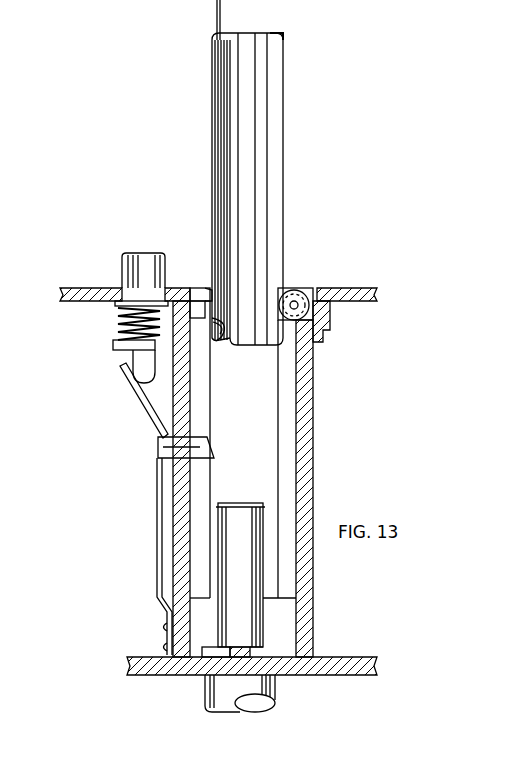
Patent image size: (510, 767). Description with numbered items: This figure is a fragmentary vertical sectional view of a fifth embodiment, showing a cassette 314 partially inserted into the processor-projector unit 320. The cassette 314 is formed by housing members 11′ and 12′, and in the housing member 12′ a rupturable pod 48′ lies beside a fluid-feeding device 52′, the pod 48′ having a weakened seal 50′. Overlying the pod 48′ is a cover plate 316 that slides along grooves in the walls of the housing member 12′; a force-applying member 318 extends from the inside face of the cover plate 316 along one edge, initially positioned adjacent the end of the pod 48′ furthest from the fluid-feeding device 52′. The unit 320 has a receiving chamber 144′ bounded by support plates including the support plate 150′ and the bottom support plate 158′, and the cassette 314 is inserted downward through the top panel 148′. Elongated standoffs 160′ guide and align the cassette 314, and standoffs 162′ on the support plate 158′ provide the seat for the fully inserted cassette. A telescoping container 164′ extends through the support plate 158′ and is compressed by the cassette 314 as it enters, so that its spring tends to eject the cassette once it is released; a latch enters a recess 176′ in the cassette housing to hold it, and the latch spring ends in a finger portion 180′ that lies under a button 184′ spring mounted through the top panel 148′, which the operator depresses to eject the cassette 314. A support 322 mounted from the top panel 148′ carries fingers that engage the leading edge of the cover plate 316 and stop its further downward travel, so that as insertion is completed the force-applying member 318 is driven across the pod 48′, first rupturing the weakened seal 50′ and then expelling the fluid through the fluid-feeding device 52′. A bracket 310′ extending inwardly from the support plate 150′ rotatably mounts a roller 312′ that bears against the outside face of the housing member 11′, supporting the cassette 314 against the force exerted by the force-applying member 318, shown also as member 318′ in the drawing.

The housing member 12′ is at (233, 36).
The housing member 11′ is at (283, 124).
The cassette 314 is at (285, 32).
The rupturable pod 48′ is at (222, 222).
The fluid-feeding device 52′ is at (216, 85).
The weakened seal 50′ is at (222, 112).
The cover plate 316 is at (216, 193).
The top panel 148′ is at (80, 290).
The force-applying member 318 is at (212, 290).
The support 322 is at (222, 334).
The button 184′ is at (137, 258).
The processor-projector unit 320 is at (111, 251).
The force-applying member 318′ is at (140, 357).
The finger portion 180′ is at (143, 400).
The recess 176′ is at (165, 450).
The standoffs 160′ is at (177, 506).
The support plate 150′ is at (307, 375).
The receiving chamber 144′ is at (278, 418).
The roller 312′ is at (294, 298).
The bracket 310′ is at (313, 300).
The telescoping container 164′ is at (264, 558).
The standoffs 162′ is at (282, 610).
The support plate 158′ is at (350, 660).